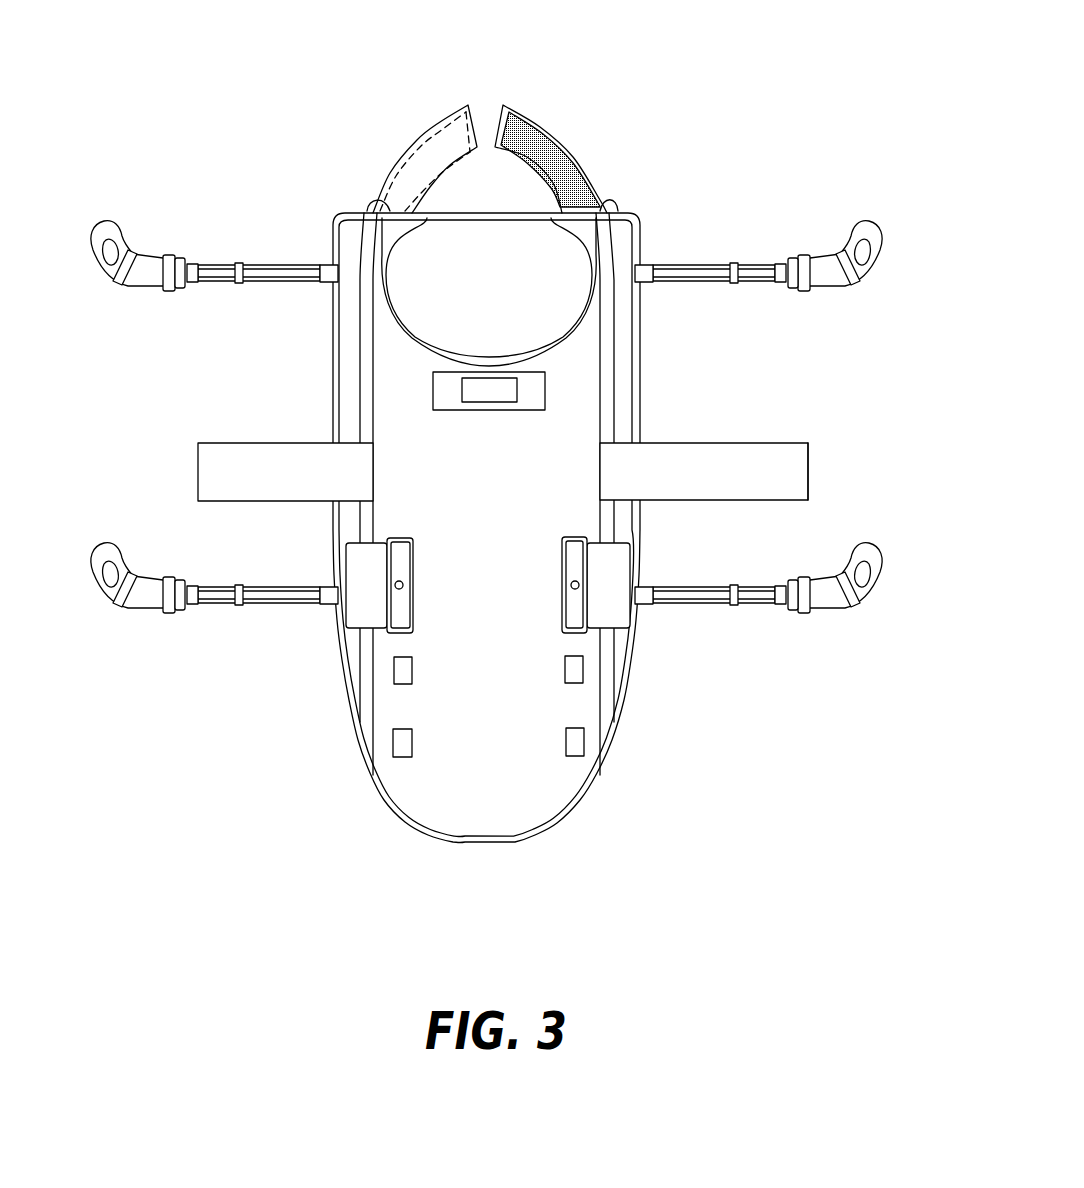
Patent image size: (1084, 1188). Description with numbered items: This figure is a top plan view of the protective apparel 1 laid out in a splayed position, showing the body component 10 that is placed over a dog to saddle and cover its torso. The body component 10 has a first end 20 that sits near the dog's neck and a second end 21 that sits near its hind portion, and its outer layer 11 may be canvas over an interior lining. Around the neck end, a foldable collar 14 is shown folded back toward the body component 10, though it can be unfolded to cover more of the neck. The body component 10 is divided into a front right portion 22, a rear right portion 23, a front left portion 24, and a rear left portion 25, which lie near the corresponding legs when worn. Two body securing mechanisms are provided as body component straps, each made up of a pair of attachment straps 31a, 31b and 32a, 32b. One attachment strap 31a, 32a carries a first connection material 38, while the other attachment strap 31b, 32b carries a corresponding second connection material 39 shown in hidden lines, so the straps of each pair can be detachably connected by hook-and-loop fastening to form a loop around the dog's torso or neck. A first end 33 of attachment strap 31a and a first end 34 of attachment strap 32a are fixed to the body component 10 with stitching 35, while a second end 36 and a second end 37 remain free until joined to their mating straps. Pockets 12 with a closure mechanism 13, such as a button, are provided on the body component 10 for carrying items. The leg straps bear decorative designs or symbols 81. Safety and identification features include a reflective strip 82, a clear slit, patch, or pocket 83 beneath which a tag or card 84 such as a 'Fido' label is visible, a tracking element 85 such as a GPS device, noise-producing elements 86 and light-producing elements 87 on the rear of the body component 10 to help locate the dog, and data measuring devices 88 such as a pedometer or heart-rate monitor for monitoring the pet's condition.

The protective apparel 1 is at (601, 836).
The body component 10 is at (385, 787).
The outer layer 11 is at (423, 780).
The pockets 12 is at (600, 614).
The closure mechanism 13 is at (574, 585).
The foldable collar 14 is at (385, 238).
The first end 20 is at (477, 295).
The second end 21 is at (488, 851).
The front right portion 22 is at (642, 308).
The rear right portion 23 is at (636, 652).
The front left portion 24 is at (333, 314).
The rear left portion 25 is at (337, 661).
The attachment strap 31a is at (762, 443).
The attachment strap 31b is at (296, 444).
The attachment strap 32a is at (575, 146).
The attachment strap 32b is at (421, 131).
The first end 33 is at (602, 482).
The first end 34 is at (620, 226).
The stitching 35 is at (494, 460).
The second end 36 is at (810, 470).
The second end 37 is at (497, 117).
The first connection material 38 is at (527, 137).
The second connection material 39 is at (402, 173).
The designs or symbols 81 is at (682, 591).
The reflective strip 82 is at (373, 362).
The clear slit, patch, or pocket 83 is at (437, 400).
The tag or card 84 is at (459, 404).
The tracking element 85 is at (566, 745).
The noise-producing elements 86 is at (412, 745).
The light-producing elements 87 is at (412, 670).
The data measuring devices 88 is at (565, 675).